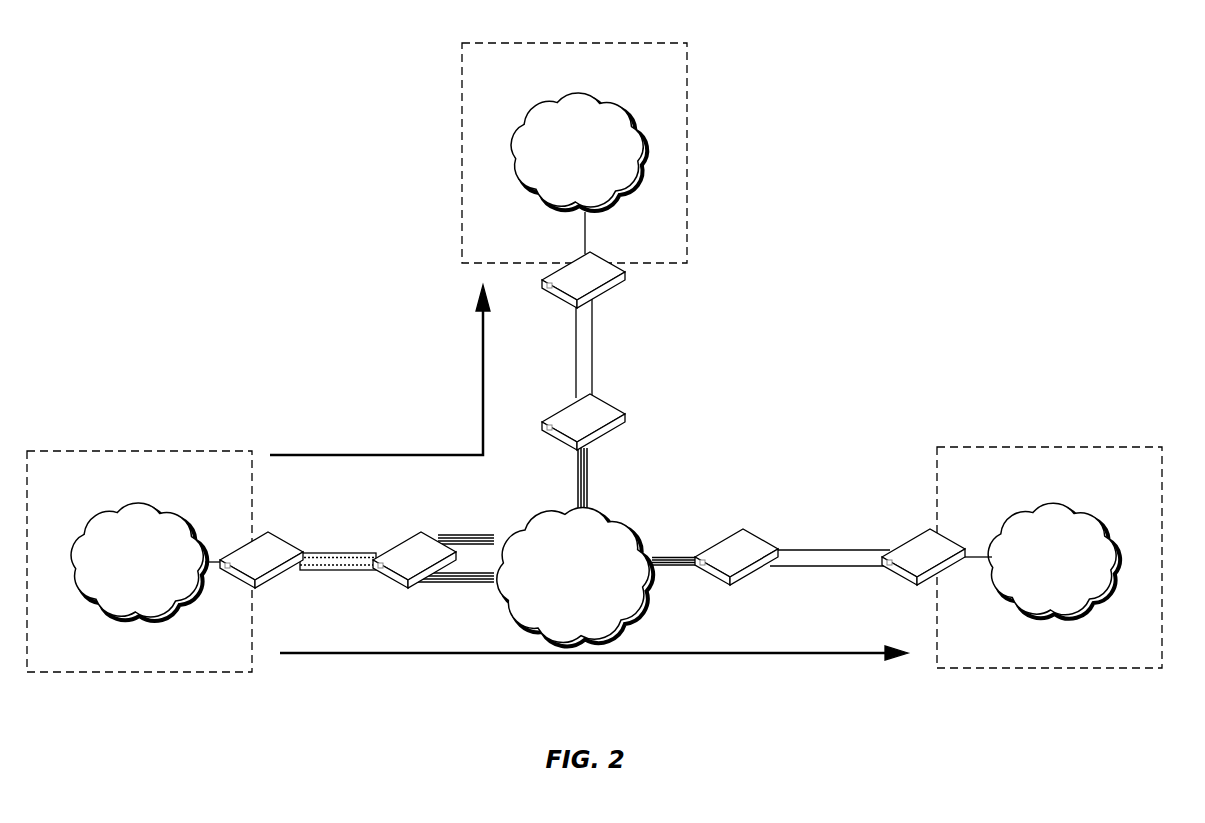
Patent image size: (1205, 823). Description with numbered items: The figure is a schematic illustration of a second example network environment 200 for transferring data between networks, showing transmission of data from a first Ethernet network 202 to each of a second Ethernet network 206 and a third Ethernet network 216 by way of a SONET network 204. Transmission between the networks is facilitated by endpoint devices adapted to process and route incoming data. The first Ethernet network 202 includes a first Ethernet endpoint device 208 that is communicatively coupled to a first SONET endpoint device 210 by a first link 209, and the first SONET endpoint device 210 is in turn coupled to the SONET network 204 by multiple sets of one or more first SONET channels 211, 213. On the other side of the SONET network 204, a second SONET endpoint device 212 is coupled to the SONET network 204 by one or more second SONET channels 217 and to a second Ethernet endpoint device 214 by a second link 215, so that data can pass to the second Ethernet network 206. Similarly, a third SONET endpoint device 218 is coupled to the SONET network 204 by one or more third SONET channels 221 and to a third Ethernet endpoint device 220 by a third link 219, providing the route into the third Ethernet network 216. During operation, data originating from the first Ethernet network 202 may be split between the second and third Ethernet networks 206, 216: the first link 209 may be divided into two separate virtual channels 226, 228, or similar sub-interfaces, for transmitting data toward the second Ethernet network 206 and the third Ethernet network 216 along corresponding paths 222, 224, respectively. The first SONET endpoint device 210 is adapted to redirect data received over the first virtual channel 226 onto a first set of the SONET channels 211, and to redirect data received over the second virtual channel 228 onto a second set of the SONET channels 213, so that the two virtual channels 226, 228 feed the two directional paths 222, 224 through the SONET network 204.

The network environment 200 is at (884, 162).
The first Ethernet network 202 is at (145, 451).
The SONET network 204 is at (546, 508).
The second Ethernet network 206 is at (1065, 447).
The first Ethernet endpoint device 208 is at (278, 535).
The first link 209 is at (332, 558).
The first SONET endpoint device 210 is at (422, 587).
The first set of SONET channels 211 is at (481, 584).
The second SONET endpoint device 212 is at (745, 586).
The second set of SONET channels 213 is at (468, 534).
The second Ethernet endpoint device 214 is at (900, 586).
The second link 215 is at (830, 555).
The third Ethernet network 216 is at (576, 43).
The second SONET channels 217 is at (681, 556).
The third SONET endpoint device 218 is at (553, 415).
The third link 219 is at (587, 348).
The third Ethernet endpoint device 220 is at (603, 290).
The third SONET channels 221 is at (590, 480).
The path 222 is at (713, 655).
The path 224 is at (432, 455).
The first virtual channel 226 is at (332, 571).
The second virtual channel 228 is at (322, 556).